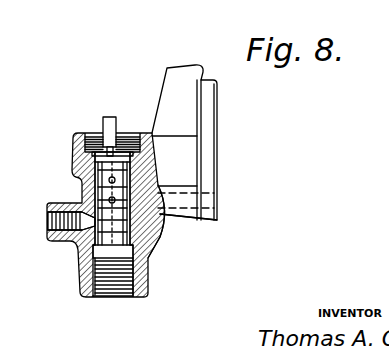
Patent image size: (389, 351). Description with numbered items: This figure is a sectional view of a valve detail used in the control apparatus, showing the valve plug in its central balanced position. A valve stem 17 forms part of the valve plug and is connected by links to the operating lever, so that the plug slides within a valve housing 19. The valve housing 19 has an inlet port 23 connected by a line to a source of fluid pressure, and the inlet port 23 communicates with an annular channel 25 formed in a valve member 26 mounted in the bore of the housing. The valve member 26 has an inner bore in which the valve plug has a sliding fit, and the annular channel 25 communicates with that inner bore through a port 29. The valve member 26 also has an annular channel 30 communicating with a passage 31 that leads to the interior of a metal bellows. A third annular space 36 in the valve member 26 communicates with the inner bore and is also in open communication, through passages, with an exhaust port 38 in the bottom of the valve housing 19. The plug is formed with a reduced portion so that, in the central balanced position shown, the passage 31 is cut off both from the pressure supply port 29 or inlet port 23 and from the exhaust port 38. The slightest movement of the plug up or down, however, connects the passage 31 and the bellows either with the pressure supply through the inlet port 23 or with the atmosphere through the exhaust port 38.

The valve stem 17 is at (117, 121).
The valve housing 19 is at (155, 222).
The inlet port 23 is at (55, 243).
The annular channel 25 is at (148, 243).
The valve member 26 is at (88, 177).
The port 29 is at (94, 296).
The annular channel 30 is at (160, 210).
The passage 31 is at (150, 198).
The third annular space 36 is at (150, 198).
The exhaust port 38 is at (116, 297).